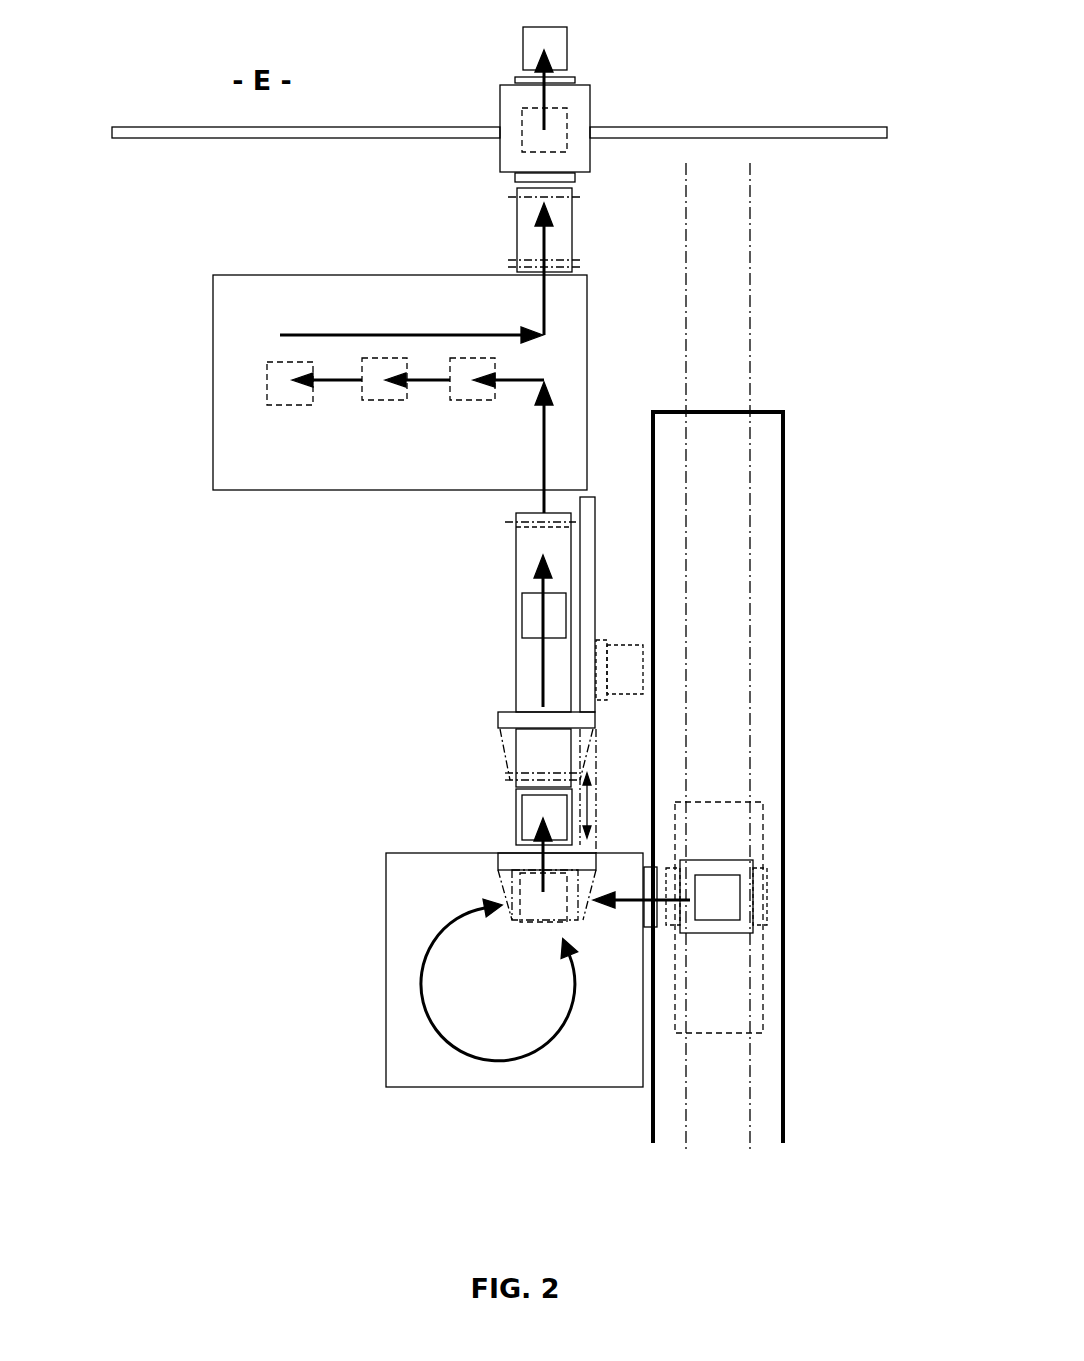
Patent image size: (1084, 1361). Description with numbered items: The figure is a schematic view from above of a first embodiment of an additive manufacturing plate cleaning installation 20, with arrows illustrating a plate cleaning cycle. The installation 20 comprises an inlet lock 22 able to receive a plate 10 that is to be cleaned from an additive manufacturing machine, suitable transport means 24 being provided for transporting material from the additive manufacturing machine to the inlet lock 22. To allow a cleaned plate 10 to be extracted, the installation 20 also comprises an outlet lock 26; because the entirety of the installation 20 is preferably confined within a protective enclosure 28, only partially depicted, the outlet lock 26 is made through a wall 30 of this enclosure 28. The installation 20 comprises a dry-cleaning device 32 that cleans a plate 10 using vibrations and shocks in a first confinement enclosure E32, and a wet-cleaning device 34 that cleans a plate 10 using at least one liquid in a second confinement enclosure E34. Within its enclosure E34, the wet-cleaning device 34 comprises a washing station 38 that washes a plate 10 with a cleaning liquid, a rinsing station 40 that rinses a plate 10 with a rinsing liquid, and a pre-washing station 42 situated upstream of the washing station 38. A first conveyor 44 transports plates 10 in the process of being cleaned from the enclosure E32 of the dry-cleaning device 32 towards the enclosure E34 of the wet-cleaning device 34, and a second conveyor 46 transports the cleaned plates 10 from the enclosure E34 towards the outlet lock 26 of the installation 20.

The plate 10 is at (530, 50).
The cleaning installation 20 is at (348, 1160).
The inlet lock 22 is at (653, 878).
The transport means 24 is at (765, 818).
The outlet lock 26 is at (606, 95).
The protective enclosure 28 is at (762, 113).
The wall 30 is at (823, 131).
The dry-cleaning device 32 is at (462, 1104).
The wet-cleaning device 34 is at (291, 504).
The washing station 38 is at (382, 403).
The rinsing station 40 is at (287, 407).
The pre-washing station 42 is at (470, 403).
The first conveyor 44 is at (503, 673).
The second conveyor 46 is at (587, 212).
The first confinement enclosure E32 is at (528, 1090).
The second confinement enclosure E34 is at (355, 492).